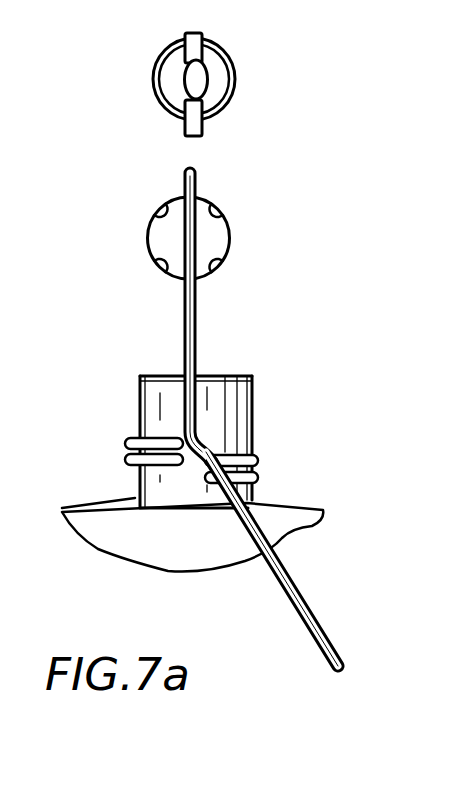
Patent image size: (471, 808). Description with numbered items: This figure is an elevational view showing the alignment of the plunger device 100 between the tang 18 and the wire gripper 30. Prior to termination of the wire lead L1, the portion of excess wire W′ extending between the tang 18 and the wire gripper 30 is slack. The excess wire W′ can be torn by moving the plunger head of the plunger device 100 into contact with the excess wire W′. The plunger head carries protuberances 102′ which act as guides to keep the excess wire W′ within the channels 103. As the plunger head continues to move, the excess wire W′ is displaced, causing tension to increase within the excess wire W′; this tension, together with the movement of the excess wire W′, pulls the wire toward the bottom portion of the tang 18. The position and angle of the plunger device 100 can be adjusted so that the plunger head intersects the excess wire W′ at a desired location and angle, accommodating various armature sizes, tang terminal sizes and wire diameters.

The wire gripper 30 is at (237, 73).
The plunger device 100 is at (228, 217).
The protuberances 102′ is at (158, 205).
The channels 103 is at (158, 237).
The tang 18 is at (252, 428).
The excess wire W′ is at (198, 332).
The wire lead L1 is at (324, 634).